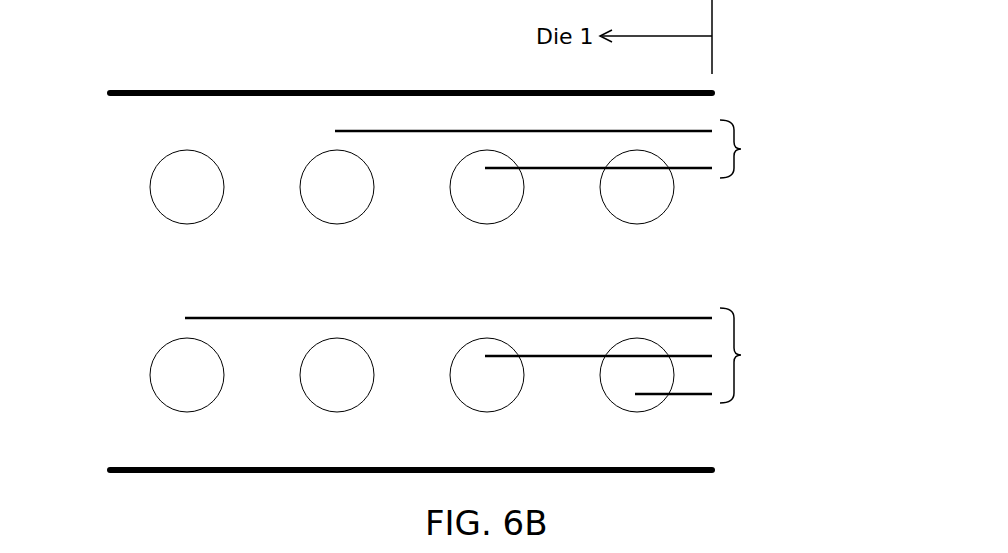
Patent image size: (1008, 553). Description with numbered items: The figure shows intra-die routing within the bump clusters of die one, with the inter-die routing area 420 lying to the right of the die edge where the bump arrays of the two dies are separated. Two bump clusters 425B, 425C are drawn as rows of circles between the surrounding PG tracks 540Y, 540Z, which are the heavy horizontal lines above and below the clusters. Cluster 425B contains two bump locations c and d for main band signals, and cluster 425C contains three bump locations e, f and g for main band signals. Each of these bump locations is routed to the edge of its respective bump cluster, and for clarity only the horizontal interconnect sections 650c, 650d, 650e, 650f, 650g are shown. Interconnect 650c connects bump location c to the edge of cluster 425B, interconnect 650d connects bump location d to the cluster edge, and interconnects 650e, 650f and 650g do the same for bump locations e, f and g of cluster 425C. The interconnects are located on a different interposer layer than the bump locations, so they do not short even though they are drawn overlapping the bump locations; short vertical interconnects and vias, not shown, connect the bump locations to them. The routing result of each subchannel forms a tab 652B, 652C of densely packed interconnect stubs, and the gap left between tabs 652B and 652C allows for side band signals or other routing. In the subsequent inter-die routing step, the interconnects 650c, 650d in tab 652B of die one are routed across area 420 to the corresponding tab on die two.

The inter-die routing area 420 is at (712, 55).
The PG track 540Y is at (376, 93).
The PG track 540Z is at (376, 470).
The bump cluster 425B is at (373, 187).
The bump cluster 425C is at (373, 375).
The interconnect 650c is at (523, 120).
The interconnect 650d is at (598, 183).
The interconnect 650e is at (448, 307).
The interconnect 650f is at (598, 344).
The interconnect 650g is at (673, 408).
The tab 652B is at (741, 149).
The tab 652C is at (741, 355).